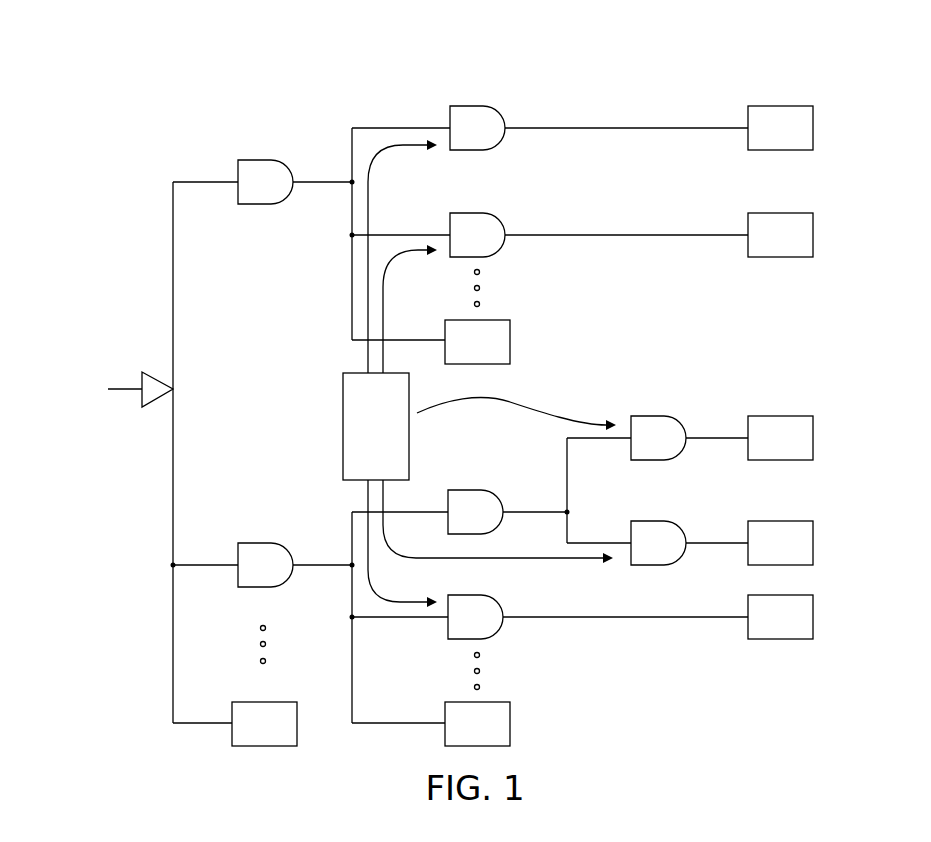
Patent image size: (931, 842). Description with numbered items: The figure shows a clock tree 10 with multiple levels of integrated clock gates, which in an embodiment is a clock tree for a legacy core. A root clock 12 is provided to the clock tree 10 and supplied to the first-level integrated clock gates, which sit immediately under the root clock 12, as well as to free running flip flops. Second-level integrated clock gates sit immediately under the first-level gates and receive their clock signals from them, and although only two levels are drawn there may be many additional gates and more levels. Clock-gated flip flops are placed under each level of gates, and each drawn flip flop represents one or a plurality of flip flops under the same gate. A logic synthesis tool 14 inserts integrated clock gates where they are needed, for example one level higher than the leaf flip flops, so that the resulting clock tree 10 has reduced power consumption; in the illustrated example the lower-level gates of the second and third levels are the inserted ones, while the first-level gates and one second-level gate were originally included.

The clock tree 10 is at (594, 57).
The root clock 12 is at (140, 389).
The logic synthesis tool 14 is at (479, 373).